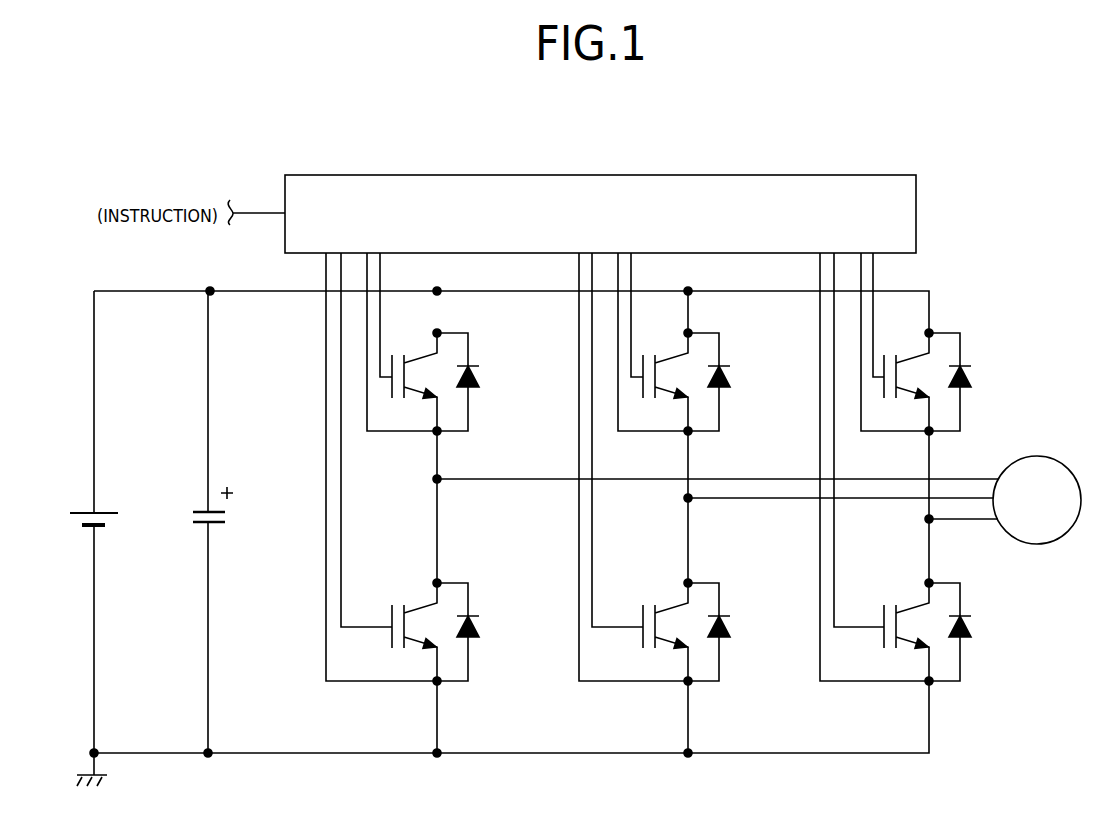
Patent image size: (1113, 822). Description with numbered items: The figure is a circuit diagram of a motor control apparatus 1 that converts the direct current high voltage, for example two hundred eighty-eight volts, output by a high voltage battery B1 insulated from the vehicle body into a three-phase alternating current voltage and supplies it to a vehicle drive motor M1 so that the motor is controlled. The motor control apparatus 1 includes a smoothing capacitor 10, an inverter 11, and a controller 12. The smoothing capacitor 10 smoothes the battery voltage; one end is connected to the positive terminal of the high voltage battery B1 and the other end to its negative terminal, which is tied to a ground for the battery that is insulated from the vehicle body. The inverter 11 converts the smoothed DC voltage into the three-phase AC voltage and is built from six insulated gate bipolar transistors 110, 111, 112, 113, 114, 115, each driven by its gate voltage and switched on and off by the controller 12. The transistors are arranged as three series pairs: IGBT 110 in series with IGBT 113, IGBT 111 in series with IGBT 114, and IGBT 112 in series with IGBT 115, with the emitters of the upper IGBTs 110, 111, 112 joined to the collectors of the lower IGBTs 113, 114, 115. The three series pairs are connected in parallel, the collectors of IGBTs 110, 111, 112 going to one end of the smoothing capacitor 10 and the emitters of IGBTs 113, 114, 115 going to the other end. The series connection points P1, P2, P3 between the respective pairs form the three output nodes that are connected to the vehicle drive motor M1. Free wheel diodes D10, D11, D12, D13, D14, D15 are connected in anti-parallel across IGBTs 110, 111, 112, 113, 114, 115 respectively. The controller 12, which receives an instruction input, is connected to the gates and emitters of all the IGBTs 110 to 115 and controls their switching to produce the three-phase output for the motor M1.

The motor control apparatus 1 is at (895, 131).
The smoothing capacitor 10 is at (202, 505).
The inverter 11 is at (933, 278).
The controller 12 is at (613, 175).
The high voltage battery B1 is at (78, 505).
The vehicle drive motor M1 is at (1035, 458).
The series connection point P1 is at (715, 490).
The series connection point P2 is at (838, 510).
The series connection point P3 is at (961, 531).
The IGBT 110 is at (398, 350).
The IGBT 111 is at (648, 350).
The IGBT 112 is at (890, 350).
The IGBT 113 is at (395, 600).
The IGBT 114 is at (645, 600).
The IGBT 115 is at (889, 600).
The free wheel diode D10 is at (484, 382).
The free wheel diode D11 is at (734, 382).
The free wheel diode D12 is at (976, 382).
The free wheel diode D13 is at (484, 632).
The free wheel diode D14 is at (734, 632).
The free wheel diode D15 is at (976, 632).